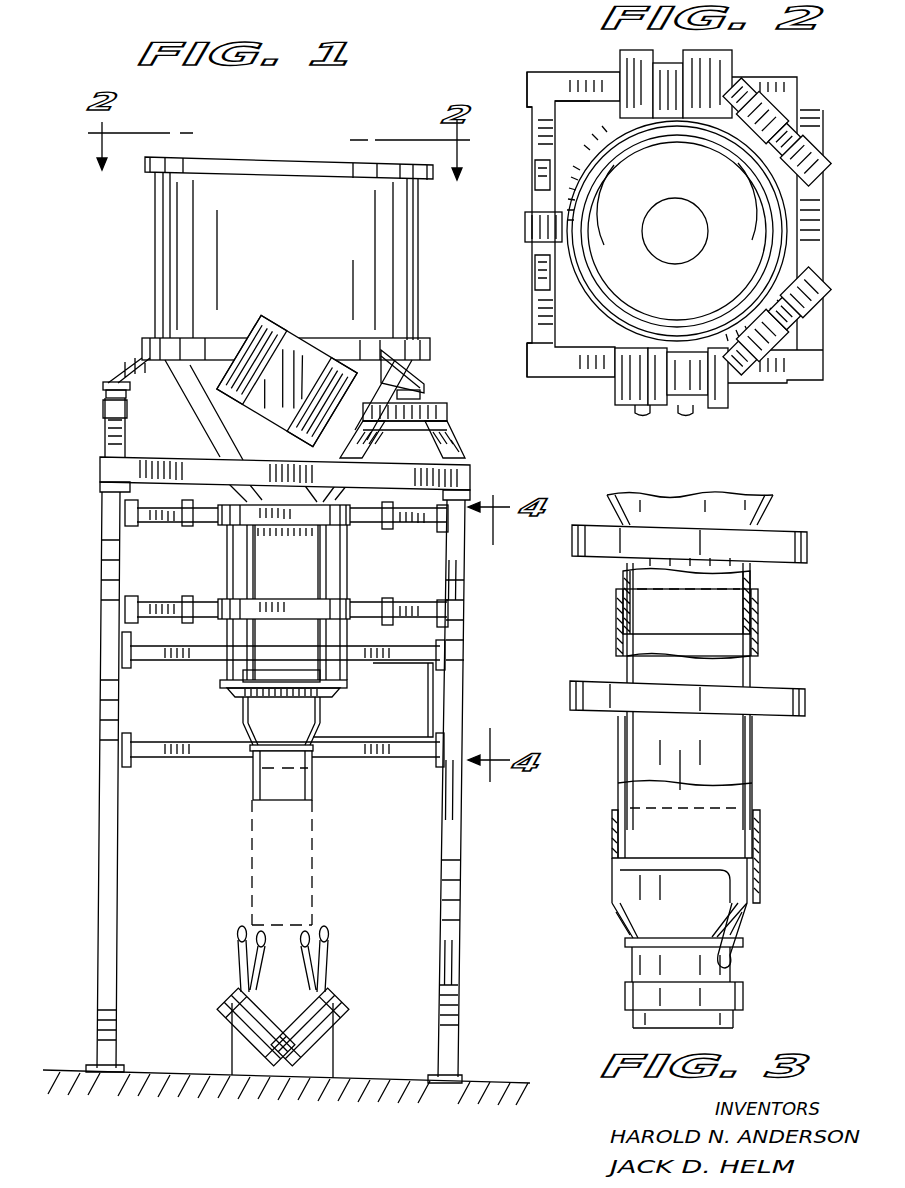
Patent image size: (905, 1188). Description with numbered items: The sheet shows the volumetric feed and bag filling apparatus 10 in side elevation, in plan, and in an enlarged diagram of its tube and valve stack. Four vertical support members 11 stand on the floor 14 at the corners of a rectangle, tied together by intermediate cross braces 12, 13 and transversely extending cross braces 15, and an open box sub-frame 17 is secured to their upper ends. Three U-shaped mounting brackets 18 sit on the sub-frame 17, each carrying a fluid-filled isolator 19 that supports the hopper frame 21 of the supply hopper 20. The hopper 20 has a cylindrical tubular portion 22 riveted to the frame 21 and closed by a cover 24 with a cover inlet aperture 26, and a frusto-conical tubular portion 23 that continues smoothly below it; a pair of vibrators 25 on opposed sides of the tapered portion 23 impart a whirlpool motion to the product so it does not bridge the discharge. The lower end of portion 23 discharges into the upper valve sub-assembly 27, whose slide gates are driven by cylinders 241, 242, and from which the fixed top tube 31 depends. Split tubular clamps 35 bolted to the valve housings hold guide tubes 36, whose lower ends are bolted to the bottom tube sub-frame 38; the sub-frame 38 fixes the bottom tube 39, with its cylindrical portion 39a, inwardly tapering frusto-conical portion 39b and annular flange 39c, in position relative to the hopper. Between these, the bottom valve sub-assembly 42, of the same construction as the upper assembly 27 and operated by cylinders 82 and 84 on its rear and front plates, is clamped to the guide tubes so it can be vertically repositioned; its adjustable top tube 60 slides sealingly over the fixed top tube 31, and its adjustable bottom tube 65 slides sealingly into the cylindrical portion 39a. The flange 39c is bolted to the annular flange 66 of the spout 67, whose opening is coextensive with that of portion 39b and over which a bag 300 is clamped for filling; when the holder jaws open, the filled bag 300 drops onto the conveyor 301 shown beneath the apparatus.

In FIG. 1, the volumetric feed and bag filling apparatus 10 is at (90, 965).
In FIG. 2, the volumetric feed and bag filling apparatus 10 is at (832, 390).
In FIG. 1, the vertical support members 11 is at (462, 892).
In FIG. 1, the intermediate cross brace 12 is at (395, 760).
In FIG. 1, the intermediate cross brace 13 is at (378, 657).
In FIG. 1, the floor 14 is at (228, 1080).
In FIG. 1, the transversely extending cross braces 15 is at (120, 665).
In FIG. 1, the open box sub-frame 17 is at (468, 484).
In FIG. 2, the open box sub-frame 17 is at (806, 244).
In FIG. 1, the U-shaped mounting brackets 18 is at (108, 440).
In FIG. 2, the U-shaped mounting brackets 18 is at (812, 172).
In FIG. 1, the fluid-filled isolator 19 is at (106, 390).
In FIG. 1, the supply hopper 20 is at (252, 247).
In FIG. 1, the hopper frame 21 is at (425, 380).
In FIG. 2, the hopper frame 21 is at (530, 228).
In FIG. 1, the cylindrical tubular portion 22 is at (185, 215).
In FIG. 1, the frusto-conical tubular portion 23 is at (200, 418).
In FIG. 3, the frusto-conical tubular portion 23 is at (770, 518).
In FIG. 1, the cover 24 is at (282, 167).
In FIG. 2, the cover 24 is at (610, 305).
In FIG. 1, the vibrators 25 is at (285, 342).
In FIG. 2, the vibrators 25 is at (732, 73).
In FIG. 2, the cover inlet aperture 26 is at (700, 250).
In FIG. 1, the upper valve sub-assembly 27 is at (300, 522).
In FIG. 3, the upper valve sub-assembly 27 is at (820, 558).
In FIG. 3, the fixed top tube 31 is at (745, 600).
In FIG. 1, the split tubular clamps 35 is at (225, 525).
In FIG. 1, the guide tube 36 is at (225, 580).
In FIG. 1, the bottom tube sub-frame 38 is at (228, 690).
In FIG. 3, the fixed bottom tube 39 is at (630, 885).
In FIG. 3, the cylindrical portion 39a is at (760, 866).
In FIG. 3, the frusto-conical portion 39b is at (620, 912).
In FIG. 3, the annular flange 39c is at (645, 938).
In FIG. 1, the bottom valve sub-assembly 42 is at (257, 616).
In FIG. 3, the bottom valve sub-assembly 42 is at (812, 700).
In FIG. 3, the adjustable top tube 60 is at (760, 628).
In FIG. 1, the adjustable bottom tube 65 is at (250, 770).
In FIG. 3, the adjustable bottom tube 65 is at (745, 836).
In FIG. 3, the annular flange 66 is at (628, 948).
In FIG. 1, the spout 67 is at (312, 788).
In FIG. 3, the spout 67 is at (735, 960).
In FIG. 1, the cylinder 82 is at (127, 592).
In FIG. 1, the cylinder 84 is at (405, 605).
In FIG. 1, the cylinder 241 is at (445, 530).
In FIG. 1, the cylinder 242 is at (127, 520).
In FIG. 1, the bag 300 is at (322, 872).
In FIG. 1, the conveyor 301 is at (332, 1010).